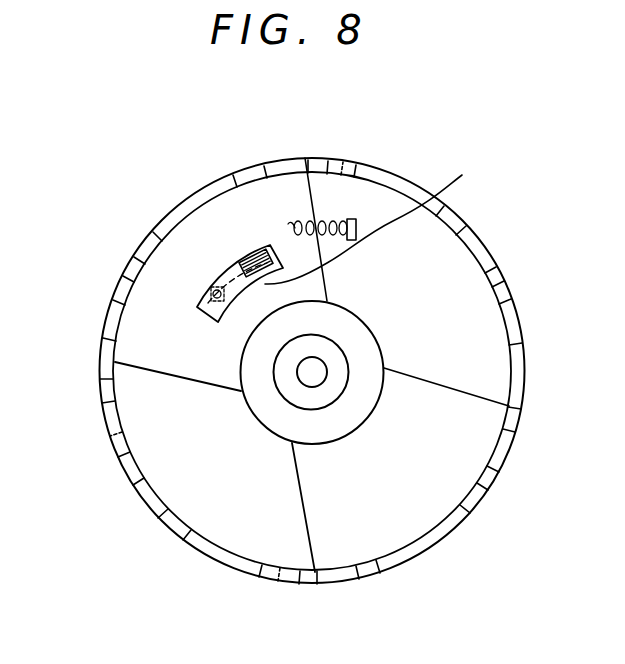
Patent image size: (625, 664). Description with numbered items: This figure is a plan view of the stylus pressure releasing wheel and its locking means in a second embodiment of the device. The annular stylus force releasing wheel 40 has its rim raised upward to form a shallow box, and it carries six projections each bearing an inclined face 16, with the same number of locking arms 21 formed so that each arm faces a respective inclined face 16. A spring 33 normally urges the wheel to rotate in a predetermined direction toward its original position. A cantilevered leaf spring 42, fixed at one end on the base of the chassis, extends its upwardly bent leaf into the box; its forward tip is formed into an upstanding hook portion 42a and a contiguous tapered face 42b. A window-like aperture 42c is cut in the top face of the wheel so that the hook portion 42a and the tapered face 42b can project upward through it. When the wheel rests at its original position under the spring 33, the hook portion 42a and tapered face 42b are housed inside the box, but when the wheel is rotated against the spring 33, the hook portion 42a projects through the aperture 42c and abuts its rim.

The inclined face 16 is at (275, 162).
The locking arm 21 is at (112, 440).
The spring 33 is at (338, 217).
The stylus force releasing wheel 40 is at (200, 560).
The leaf spring 42 is at (214, 260).
The hook portion 42a is at (462, 175).
The tapered face 42b is at (255, 253).
The window-like aperture 42c is at (273, 257).